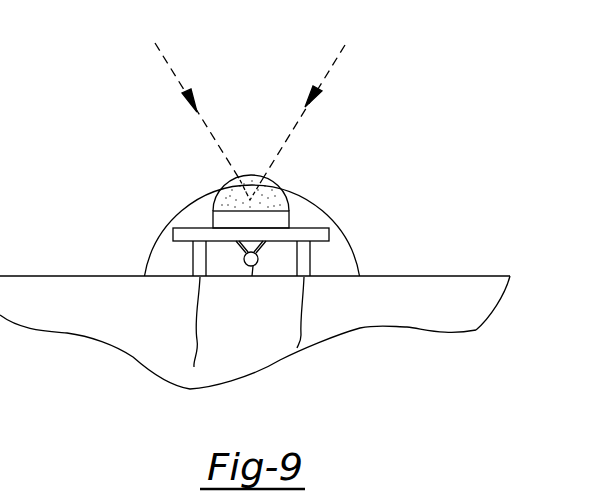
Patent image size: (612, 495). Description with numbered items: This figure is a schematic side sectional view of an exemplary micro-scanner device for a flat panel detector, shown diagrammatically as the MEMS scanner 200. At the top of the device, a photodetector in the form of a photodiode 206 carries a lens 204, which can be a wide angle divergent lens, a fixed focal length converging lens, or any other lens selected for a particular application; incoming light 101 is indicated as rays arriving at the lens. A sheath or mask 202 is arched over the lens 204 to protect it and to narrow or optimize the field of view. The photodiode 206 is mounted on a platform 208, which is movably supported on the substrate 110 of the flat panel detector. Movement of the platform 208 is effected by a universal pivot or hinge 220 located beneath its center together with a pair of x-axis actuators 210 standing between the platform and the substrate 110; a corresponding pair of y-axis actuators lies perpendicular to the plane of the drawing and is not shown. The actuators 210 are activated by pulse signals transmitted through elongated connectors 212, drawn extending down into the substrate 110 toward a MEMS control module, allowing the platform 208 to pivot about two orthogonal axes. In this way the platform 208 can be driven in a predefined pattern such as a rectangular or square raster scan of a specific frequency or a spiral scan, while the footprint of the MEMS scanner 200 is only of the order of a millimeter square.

The incident light rays 101 is at (173, 71).
The substrate 110 is at (478, 305).
The MEMS scanner 200 is at (433, 141).
The sheath or mask 202 is at (325, 175).
The lens 204 is at (256, 173).
The photodiode 206 is at (212, 213).
The platform 208 is at (330, 232).
The x-axis actuators 210 is at (192, 260).
The elongated connectors 212 is at (192, 345).
The universal pivot or hinge 220 is at (248, 265).